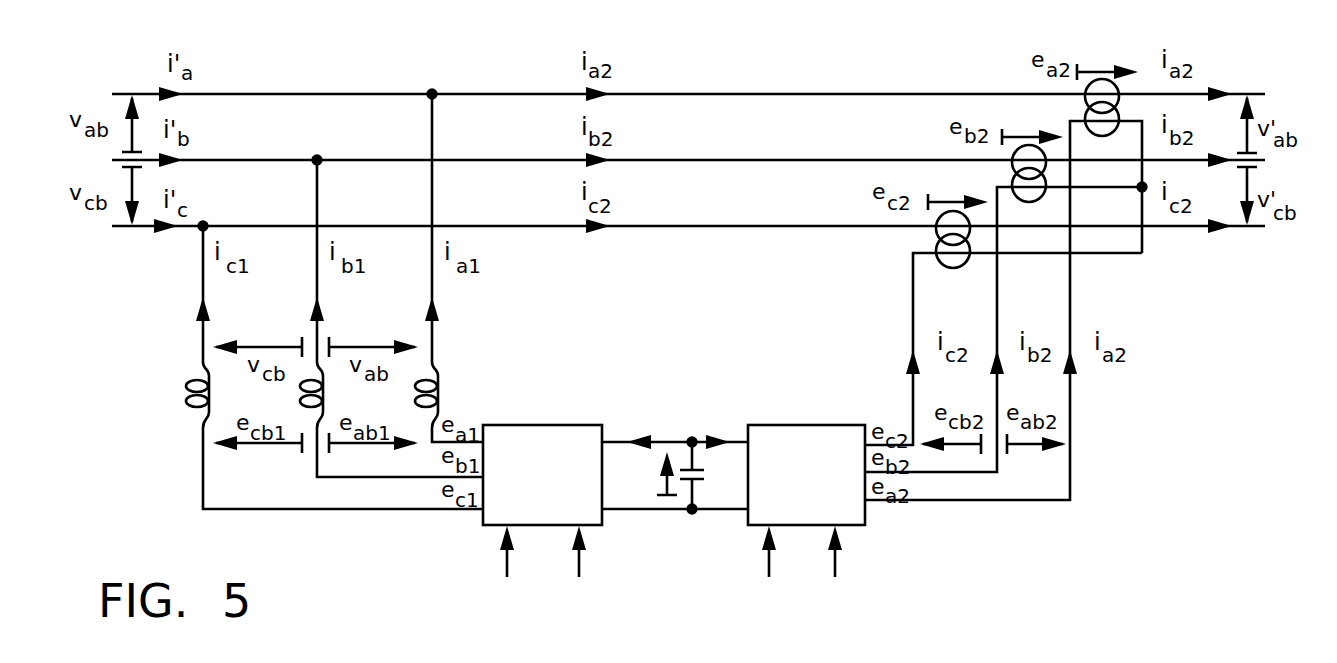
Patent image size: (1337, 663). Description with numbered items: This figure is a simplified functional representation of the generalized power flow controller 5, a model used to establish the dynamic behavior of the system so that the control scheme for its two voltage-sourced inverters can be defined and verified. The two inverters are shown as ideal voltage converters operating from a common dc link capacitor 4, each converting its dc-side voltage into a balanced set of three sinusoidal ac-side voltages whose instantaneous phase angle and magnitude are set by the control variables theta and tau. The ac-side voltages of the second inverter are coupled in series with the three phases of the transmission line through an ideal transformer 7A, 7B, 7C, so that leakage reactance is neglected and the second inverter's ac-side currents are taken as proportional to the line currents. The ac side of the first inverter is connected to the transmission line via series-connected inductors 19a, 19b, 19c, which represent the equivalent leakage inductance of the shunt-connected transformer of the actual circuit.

The dc link capacitor 4 is at (700, 481).
The power flow controller 5 is at (703, 348).
The ideal transformer 7A is at (1093, 89).
The ideal transformer 7B is at (1010, 156).
The ideal transformer 7C is at (935, 222).
The series-connected inductor 19a is at (437, 371).
The series-connected inductor 19b is at (306, 405).
The series-connected inductor 19c is at (195, 389).